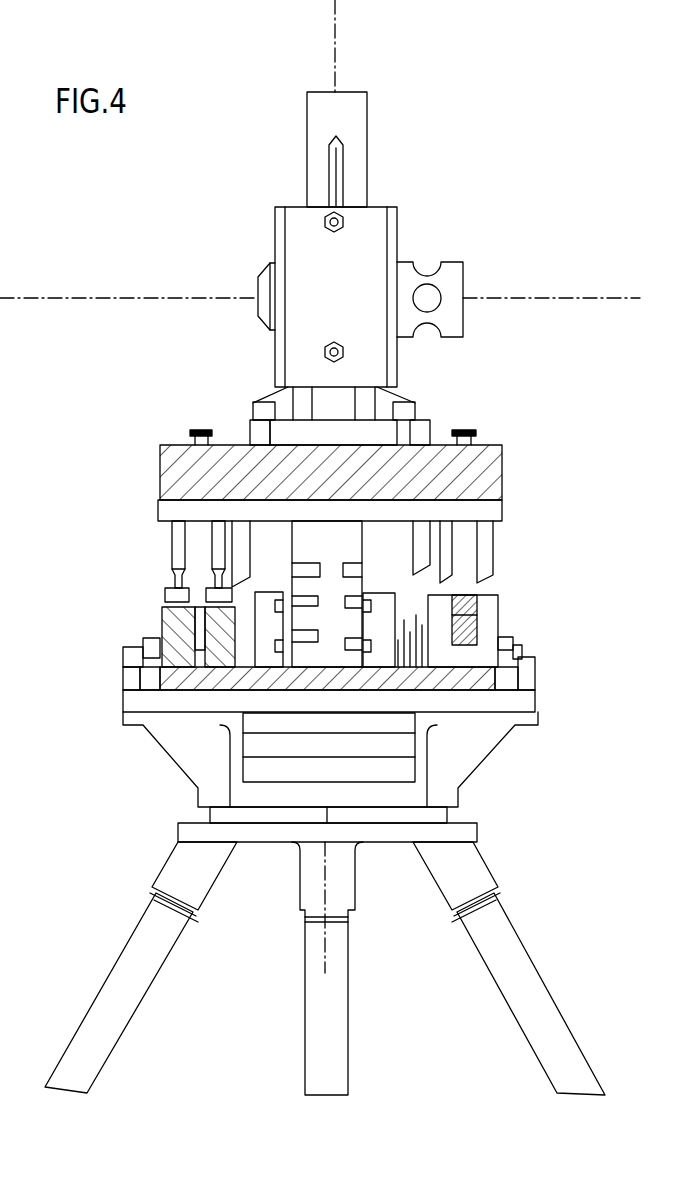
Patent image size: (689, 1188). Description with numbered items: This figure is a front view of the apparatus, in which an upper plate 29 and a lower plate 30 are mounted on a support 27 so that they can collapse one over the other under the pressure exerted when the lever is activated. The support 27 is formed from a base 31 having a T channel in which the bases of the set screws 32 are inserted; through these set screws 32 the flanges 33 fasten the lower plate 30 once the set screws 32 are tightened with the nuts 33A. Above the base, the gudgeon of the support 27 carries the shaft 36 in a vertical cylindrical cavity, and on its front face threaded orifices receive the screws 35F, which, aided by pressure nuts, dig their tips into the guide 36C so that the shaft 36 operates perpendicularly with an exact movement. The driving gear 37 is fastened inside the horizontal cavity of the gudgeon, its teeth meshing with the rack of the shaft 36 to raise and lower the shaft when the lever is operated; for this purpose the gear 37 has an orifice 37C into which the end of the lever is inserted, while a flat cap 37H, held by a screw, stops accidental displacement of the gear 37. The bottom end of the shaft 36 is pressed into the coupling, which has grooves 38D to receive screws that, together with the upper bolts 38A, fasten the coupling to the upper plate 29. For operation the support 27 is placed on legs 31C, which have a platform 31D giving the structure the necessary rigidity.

The support 27 is at (395, 297).
The upper plate 29 is at (361, 483).
The lower plate 30 is at (376, 594).
The base 31 is at (344, 756).
The legs 31C is at (335, 968).
The platform 31D is at (368, 825).
The set screws 32 is at (325, 625).
The flanges 33 is at (323, 686).
The nuts 33A is at (310, 645).
The screws 35F is at (384, 262).
The shaft 36 is at (371, 138).
The guide 36C is at (375, 166).
The driving gear 37 is at (453, 284).
The orifice 37C is at (474, 285).
The flat cap 37H is at (209, 309).
The upper bolts 38A is at (319, 399).
The grooves 38D is at (309, 422).